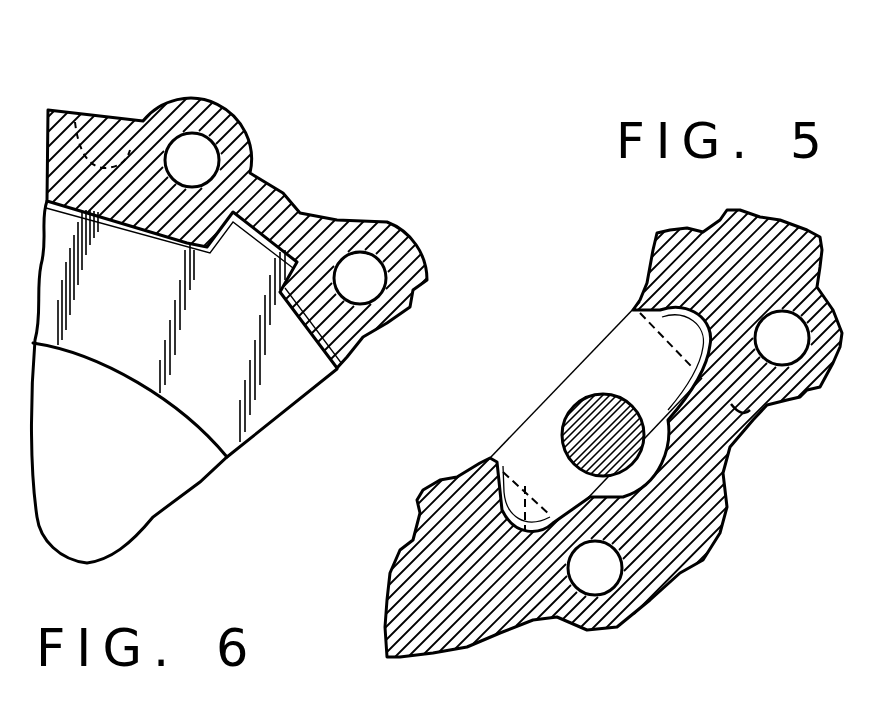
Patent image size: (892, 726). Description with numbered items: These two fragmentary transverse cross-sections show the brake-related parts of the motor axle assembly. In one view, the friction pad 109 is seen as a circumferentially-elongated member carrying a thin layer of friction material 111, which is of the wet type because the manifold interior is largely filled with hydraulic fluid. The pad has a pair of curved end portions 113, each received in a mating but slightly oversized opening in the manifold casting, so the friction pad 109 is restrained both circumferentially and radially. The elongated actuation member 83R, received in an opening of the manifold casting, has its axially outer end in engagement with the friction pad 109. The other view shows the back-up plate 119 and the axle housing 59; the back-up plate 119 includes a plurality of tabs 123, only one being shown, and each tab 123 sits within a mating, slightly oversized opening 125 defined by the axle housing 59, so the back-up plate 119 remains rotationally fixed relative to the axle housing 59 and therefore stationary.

In FIG. 6, the axle housing 59 is at (167, 112).
In FIG. 5, the axle housing 59 is at (735, 406).
In FIG. 6, the tab 123 is at (303, 215).
In FIG. 6, the opening 125 is at (285, 274).
In FIG. 6, the back-up plate 119 is at (127, 327).
In FIG. 5, the friction pad 109 is at (620, 335).
In FIG. 5, the curved end portion 113 is at (695, 312).
In FIG. 5, the actuation member 83R is at (585, 398).
In FIG. 5, the friction material 111 is at (525, 530).